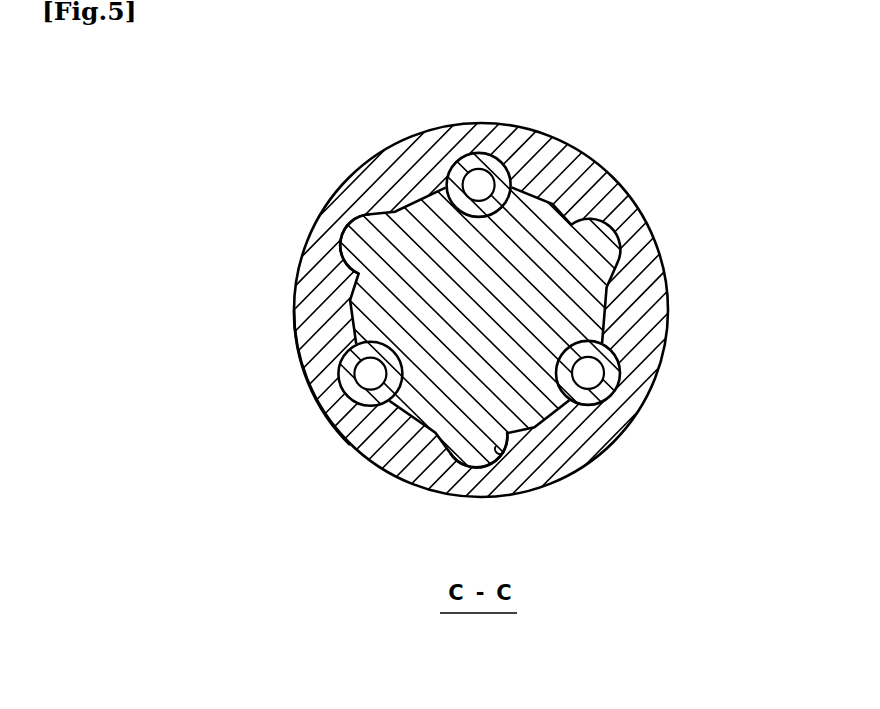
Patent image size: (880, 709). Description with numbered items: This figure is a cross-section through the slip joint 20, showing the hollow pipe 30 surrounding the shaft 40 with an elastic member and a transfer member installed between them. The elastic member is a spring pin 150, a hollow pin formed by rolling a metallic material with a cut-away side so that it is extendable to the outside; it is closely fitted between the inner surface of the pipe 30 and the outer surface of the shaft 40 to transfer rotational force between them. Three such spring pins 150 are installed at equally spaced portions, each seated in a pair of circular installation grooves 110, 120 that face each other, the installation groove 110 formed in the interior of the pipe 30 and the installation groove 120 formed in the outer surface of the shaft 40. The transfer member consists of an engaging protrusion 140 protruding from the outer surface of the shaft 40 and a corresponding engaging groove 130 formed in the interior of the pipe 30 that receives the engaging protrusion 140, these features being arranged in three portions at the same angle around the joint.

The slip joint 20 is at (481, 302).
The pipe 30 is at (588, 156).
The shaft 40 is at (547, 312).
The installation groove 110 is at (338, 424).
The installation groove 120 is at (410, 313).
The engaging groove 130 is at (501, 459).
The engaging protrusion 140 is at (493, 456).
The spring pin 150 is at (612, 363).